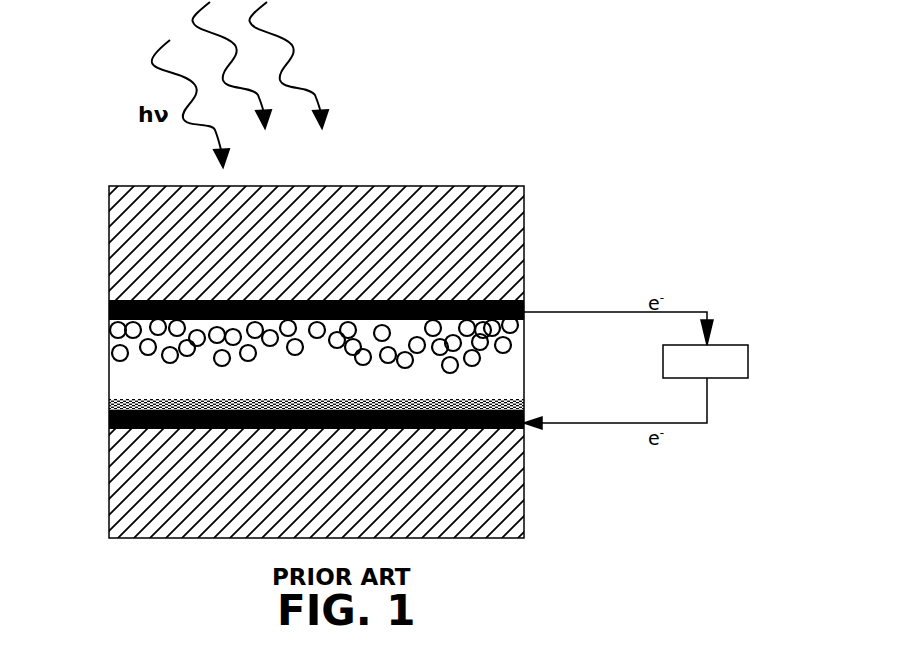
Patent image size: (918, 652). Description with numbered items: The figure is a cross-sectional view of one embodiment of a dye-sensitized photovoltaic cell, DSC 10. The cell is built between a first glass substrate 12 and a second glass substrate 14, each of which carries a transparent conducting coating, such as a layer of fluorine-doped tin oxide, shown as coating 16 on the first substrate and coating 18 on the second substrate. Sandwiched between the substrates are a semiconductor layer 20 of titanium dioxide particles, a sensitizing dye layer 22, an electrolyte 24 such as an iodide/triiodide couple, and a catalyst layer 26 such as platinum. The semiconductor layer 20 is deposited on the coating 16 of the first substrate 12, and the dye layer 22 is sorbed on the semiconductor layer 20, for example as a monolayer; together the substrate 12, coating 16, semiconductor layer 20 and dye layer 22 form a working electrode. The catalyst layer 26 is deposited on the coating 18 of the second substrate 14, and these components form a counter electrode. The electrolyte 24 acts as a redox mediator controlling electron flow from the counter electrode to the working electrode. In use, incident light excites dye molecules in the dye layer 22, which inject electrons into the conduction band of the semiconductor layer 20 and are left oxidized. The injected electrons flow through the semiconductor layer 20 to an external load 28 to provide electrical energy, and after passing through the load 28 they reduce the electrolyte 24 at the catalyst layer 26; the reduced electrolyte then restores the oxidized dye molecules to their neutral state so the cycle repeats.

The DSC 10 is at (612, 151).
The first glass substrate 12 is at (128, 270).
The second glass substrate 14 is at (128, 488).
The transparent conducting coating 16 is at (108, 310).
The transparent conducting coating 18 is at (110, 427).
The semiconductor layer 20 is at (506, 343).
The sensitizing dye layer 22 is at (480, 358).
The electrolyte 24 is at (515, 388).
The catalyst layer 26 is at (112, 403).
The external load 28 is at (737, 344).